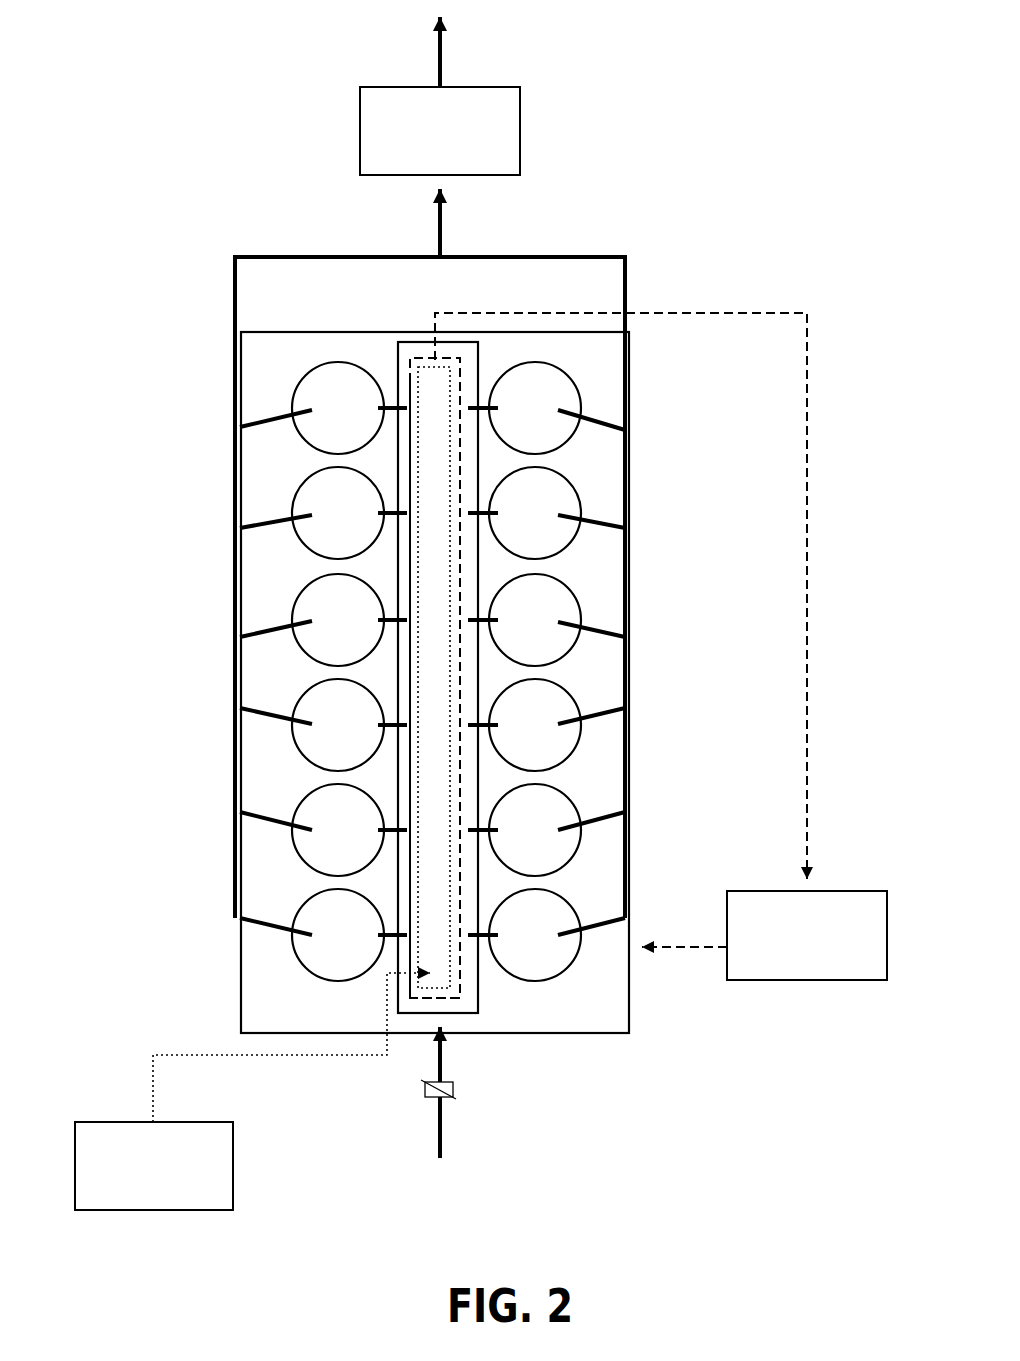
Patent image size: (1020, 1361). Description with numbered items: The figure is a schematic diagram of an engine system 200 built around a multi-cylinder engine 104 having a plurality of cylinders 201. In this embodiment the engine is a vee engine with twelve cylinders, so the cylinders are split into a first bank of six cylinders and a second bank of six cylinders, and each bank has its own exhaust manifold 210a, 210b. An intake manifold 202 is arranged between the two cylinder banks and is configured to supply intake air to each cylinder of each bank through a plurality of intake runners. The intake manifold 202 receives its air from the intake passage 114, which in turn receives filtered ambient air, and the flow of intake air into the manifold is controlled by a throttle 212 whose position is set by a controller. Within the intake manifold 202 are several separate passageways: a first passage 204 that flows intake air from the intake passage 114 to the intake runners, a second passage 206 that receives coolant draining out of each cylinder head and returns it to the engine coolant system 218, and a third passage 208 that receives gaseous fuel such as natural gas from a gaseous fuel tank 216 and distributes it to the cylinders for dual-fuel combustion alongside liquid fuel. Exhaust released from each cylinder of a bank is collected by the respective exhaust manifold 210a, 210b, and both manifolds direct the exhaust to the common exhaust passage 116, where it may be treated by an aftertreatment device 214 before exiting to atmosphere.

The engine system 200 is at (624, 46).
The multi-cylinder engine 104 is at (657, 279).
The aftertreatment device 214 is at (440, 131).
The exhaust passage 116 is at (437, 247).
The cylinder 201 is at (296, 393).
The intake manifold 202 is at (422, 343).
The first passage 204 is at (410, 355).
The second passage 206 is at (417, 368).
The third passage 208 is at (428, 403).
The exhaust manifold 210a is at (241, 760).
The exhaust manifold 210b is at (630, 760).
The throttle 212 is at (455, 1096).
The intake passage 114 is at (437, 1115).
The gaseous fuel tank 216 is at (110, 1122).
The engine coolant system 218 is at (760, 891).